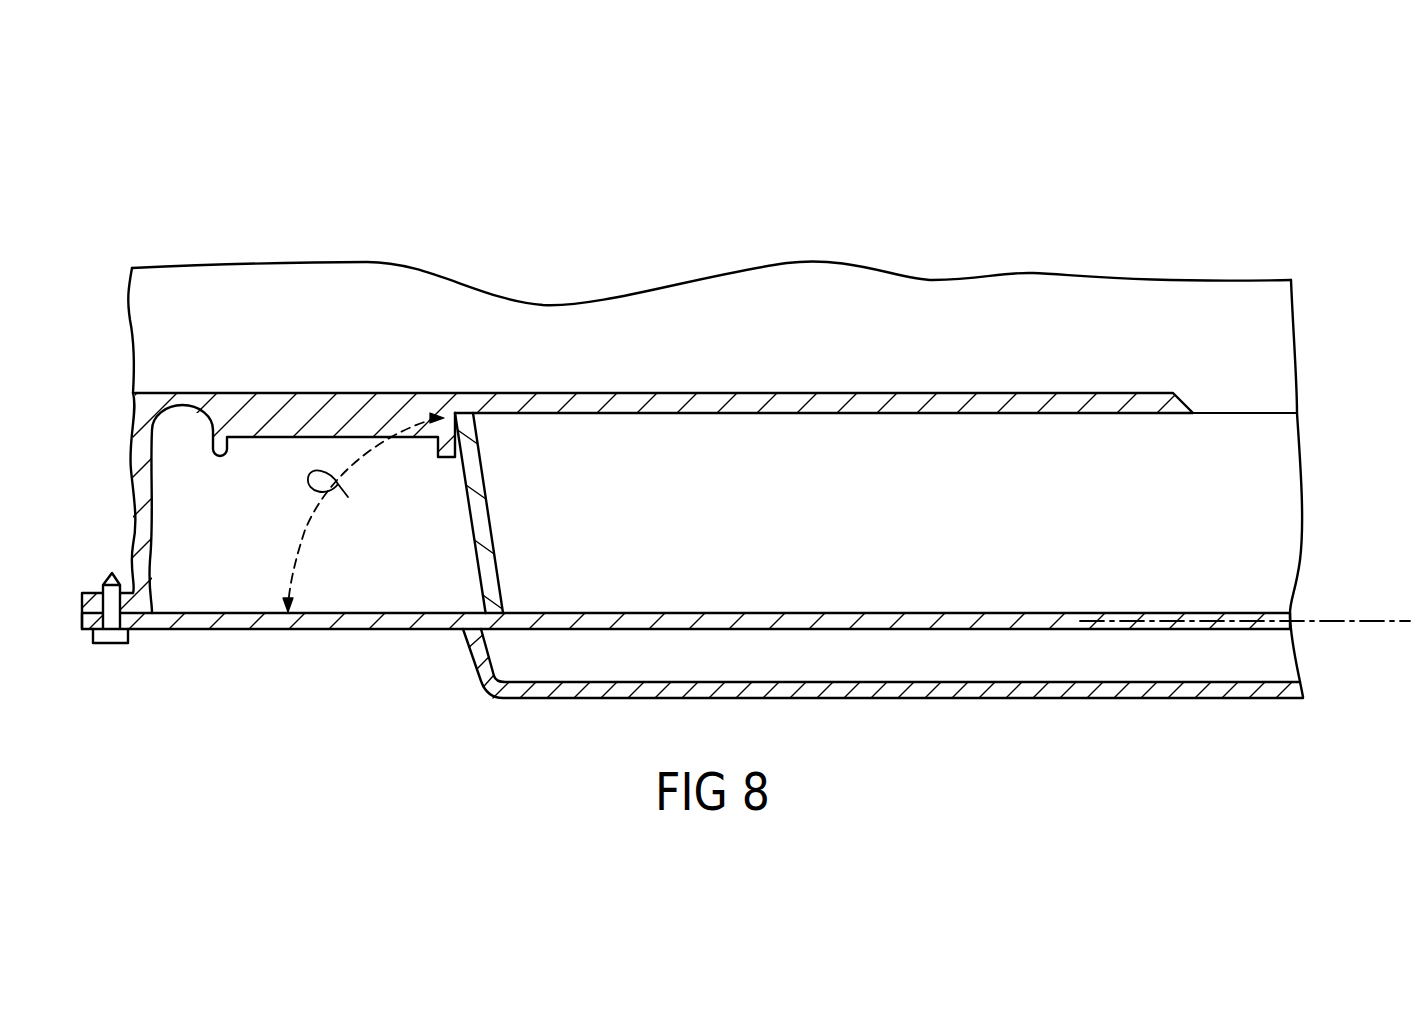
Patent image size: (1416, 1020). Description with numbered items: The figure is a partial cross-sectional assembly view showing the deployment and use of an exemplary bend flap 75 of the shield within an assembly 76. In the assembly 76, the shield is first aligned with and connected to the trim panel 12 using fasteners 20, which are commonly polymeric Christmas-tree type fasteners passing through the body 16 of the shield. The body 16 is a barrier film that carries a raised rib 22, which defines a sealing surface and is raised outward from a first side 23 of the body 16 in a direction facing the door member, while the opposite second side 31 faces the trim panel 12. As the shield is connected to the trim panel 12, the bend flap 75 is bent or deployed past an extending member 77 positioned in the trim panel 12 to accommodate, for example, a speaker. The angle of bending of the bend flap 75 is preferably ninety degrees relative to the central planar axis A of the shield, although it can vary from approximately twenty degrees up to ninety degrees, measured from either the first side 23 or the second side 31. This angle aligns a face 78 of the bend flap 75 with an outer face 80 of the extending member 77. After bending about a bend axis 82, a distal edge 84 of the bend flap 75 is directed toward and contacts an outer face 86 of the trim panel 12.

The trim panel 12 is at (1045, 293).
The body 16 is at (625, 622).
The fasteners 20 is at (110, 643).
The raised rib 22 is at (853, 690).
The first side 23 is at (474, 560).
The second side 31 is at (493, 546).
The bend flap 75 is at (476, 447).
The assembly 76 is at (906, 175).
The extending member 77 is at (222, 458).
The face 78 is at (445, 514).
The outer face 80 is at (477, 430).
The bend axis 82 is at (514, 596).
The distal edge 84 is at (460, 413).
The outer face 86 is at (661, 413).
The planar axis A is at (1330, 618).